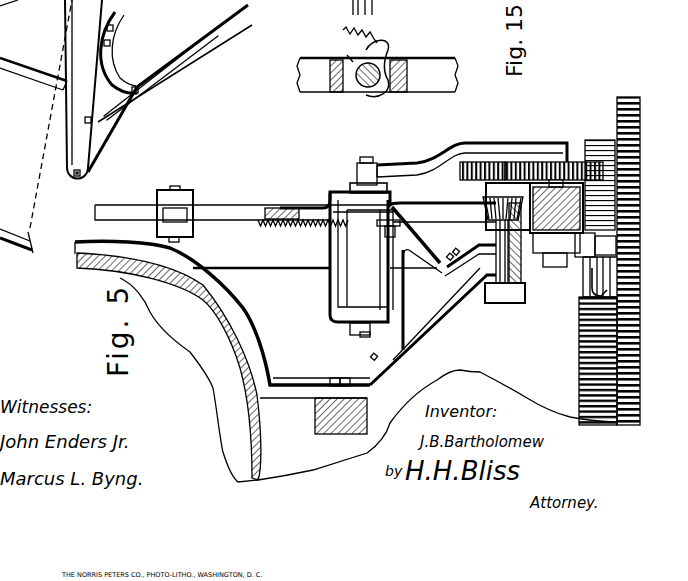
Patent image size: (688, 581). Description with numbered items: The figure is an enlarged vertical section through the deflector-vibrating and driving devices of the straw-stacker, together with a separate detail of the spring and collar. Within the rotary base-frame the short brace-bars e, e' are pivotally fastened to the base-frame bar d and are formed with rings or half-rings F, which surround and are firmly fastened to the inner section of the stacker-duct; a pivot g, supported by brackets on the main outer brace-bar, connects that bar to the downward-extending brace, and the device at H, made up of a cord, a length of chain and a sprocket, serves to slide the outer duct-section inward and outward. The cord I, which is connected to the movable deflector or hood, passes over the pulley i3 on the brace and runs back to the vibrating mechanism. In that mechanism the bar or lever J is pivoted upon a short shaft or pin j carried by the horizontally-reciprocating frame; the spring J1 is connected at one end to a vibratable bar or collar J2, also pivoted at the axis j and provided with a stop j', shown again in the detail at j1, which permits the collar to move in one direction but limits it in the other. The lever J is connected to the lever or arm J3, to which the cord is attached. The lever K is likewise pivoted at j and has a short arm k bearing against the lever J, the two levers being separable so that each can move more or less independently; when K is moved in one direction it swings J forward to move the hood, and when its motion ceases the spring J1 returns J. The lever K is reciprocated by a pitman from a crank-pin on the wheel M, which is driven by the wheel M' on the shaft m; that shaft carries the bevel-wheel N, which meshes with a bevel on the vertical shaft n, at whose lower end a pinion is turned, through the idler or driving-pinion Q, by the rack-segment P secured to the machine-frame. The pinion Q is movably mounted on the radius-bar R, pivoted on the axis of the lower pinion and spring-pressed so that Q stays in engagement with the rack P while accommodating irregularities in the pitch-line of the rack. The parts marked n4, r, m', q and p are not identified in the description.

In FIG. 15, the spring J1 is at (356, 31).
In FIG. 15, the stop j' is at (339, 50).
In FIG. 5, the stop j' is at (296, 230).
In FIG. 15, the vibratable bar or collar J2 is at (366, 90).
In FIG. 5, the vibratable bar or collar J2 is at (363, 287).
In FIG. 15, the stop j1 is at (387, 94).
In FIG. 5, the pivot g is at (133, 83).
In FIG. 5, the lever arm n4 is at (98, 125).
In FIG. 5, the vertical shaft n is at (100, 115).
In FIG. 5, the pulley i3 is at (72, 181).
In FIG. 5, the brace-bar e is at (175, 61).
In FIG. 5, the duct-sliding device H is at (209, 62).
In FIG. 5, the lever or arm J3 is at (188, 188).
In FIG. 5, the bar or lever J is at (243, 222).
In FIG. 5, the lever K is at (363, 180).
In FIG. 5, the short arm k is at (350, 187).
In FIG. 5, the cord I is at (432, 160).
In FIG. 5, the wheel M' is at (497, 230).
In FIG. 5, the wheel M is at (560, 173).
In FIG. 5, the rack-segment P is at (618, 98).
In FIG. 5, the pin r is at (605, 245).
In FIG. 5, the bevel gear m' is at (499, 211).
In FIG. 5, the shaft m is at (505, 275).
In FIG. 5, the base-frame bar d is at (539, 258).
In FIG. 5, the radius-bar R is at (592, 283).
In FIG. 5, the idler or driving-pinion Q is at (607, 287).
In FIG. 5, the pin q is at (620, 312).
In FIG. 5, the tooth p is at (590, 345).
In FIG. 5, the bevel-wheel N is at (580, 398).
In FIG. 5, the brace-bar e' is at (433, 296).
In FIG. 5, the rings or half-rings F is at (213, 302).
In FIG. 5, the short shaft or pin j is at (338, 329).